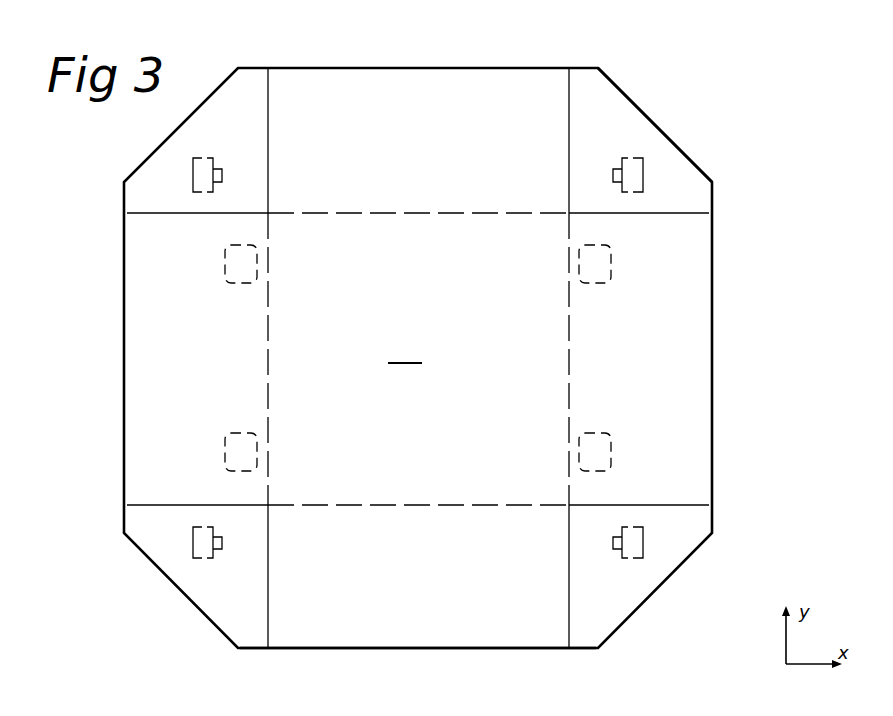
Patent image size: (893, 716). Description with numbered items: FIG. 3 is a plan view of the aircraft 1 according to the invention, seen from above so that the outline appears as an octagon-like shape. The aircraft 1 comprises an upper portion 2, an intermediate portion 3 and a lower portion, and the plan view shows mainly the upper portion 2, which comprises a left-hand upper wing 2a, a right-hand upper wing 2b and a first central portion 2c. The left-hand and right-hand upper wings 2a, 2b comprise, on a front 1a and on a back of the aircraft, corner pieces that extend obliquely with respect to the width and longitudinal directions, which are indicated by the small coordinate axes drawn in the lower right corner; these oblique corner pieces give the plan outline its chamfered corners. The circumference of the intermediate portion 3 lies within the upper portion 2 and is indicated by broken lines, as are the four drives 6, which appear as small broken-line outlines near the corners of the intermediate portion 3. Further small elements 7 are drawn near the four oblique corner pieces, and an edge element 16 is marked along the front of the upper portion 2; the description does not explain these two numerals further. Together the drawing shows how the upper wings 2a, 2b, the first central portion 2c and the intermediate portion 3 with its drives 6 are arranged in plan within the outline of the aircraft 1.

The aircraft 1 is at (660, 58).
The front 1a is at (412, 648).
The upper portion 2 is at (643, 160).
The left-hand upper wing 2a is at (188, 360).
The right-hand upper wing 2b is at (632, 345).
The first central portion 2c is at (470, 575).
The intermediate portion 3 is at (420, 288).
The drive 6 is at (233, 267).
The clip 7 is at (193, 174).
The top edge 16 is at (340, 68).